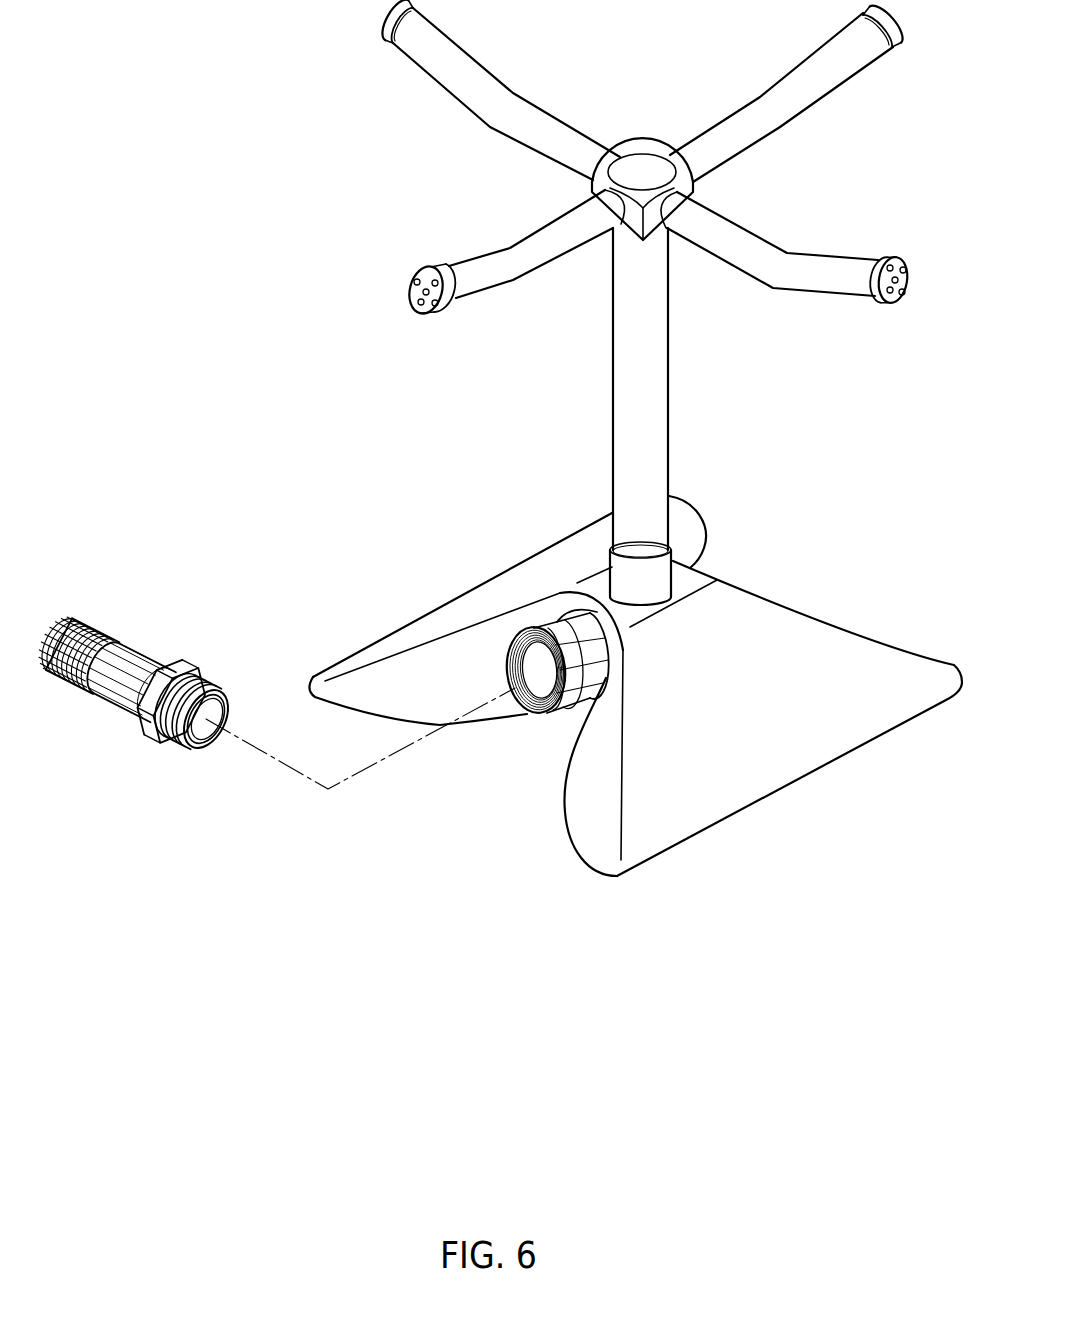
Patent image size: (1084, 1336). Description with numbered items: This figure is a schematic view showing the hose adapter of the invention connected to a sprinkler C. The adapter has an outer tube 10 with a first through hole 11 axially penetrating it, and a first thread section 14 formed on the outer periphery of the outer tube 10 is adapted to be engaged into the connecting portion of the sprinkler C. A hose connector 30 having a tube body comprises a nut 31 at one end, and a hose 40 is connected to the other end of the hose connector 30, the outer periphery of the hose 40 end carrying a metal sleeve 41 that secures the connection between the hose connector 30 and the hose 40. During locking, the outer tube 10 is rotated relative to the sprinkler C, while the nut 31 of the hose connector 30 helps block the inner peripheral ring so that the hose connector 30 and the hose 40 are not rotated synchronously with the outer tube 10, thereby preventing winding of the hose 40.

The outer tube 10 is at (185, 677).
The first through hole 11 is at (215, 707).
The first thread section 14 is at (178, 735).
The hose connector 30 is at (188, 686).
The nut 31 is at (140, 697).
The hose 40 is at (104, 614).
The metal sleeve 41 is at (143, 643).
The sprinkler C is at (733, 815).